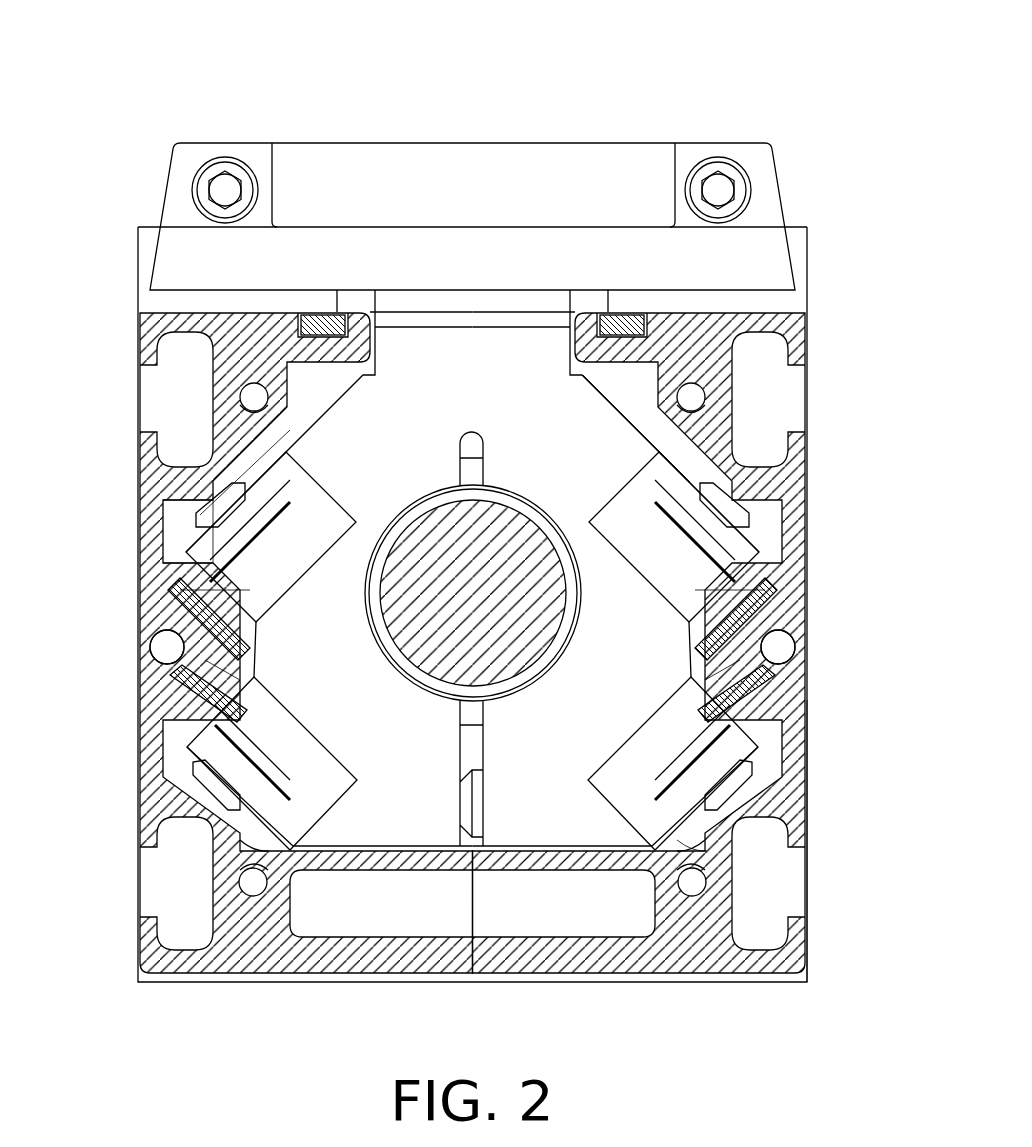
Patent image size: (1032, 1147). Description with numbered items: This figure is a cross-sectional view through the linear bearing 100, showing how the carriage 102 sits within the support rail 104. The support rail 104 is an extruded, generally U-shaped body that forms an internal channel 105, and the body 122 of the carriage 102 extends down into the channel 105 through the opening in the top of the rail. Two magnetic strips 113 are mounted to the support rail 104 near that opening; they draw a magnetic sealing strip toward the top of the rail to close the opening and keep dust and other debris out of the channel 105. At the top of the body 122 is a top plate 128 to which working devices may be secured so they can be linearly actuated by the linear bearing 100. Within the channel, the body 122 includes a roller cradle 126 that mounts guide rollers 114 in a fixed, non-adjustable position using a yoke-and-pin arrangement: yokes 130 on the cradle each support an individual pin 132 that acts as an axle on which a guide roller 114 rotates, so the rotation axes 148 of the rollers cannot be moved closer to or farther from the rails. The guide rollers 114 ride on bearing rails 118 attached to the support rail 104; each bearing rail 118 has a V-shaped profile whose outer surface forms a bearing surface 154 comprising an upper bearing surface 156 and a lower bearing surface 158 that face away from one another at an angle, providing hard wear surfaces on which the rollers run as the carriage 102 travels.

The linear bearing 100 is at (780, 77).
The carriage 102 is at (471, 108).
The support rail 104 is at (802, 528).
The internal channel 105 is at (305, 378).
The magnetic strips 113 is at (325, 330).
The guide rollers 114 is at (305, 505).
The bearing rails 118 is at (200, 688).
The body 122 is at (630, 390).
The roller cradle 126 is at (355, 812).
The top plate 128 is at (768, 192).
The yokes 130 is at (175, 537).
The pin 132 is at (225, 500).
The axes 148 is at (815, 828).
The bearing surface 154 is at (150, 648).
The upper bearing surface 156 is at (190, 578).
The lower bearing surface 158 is at (215, 735).